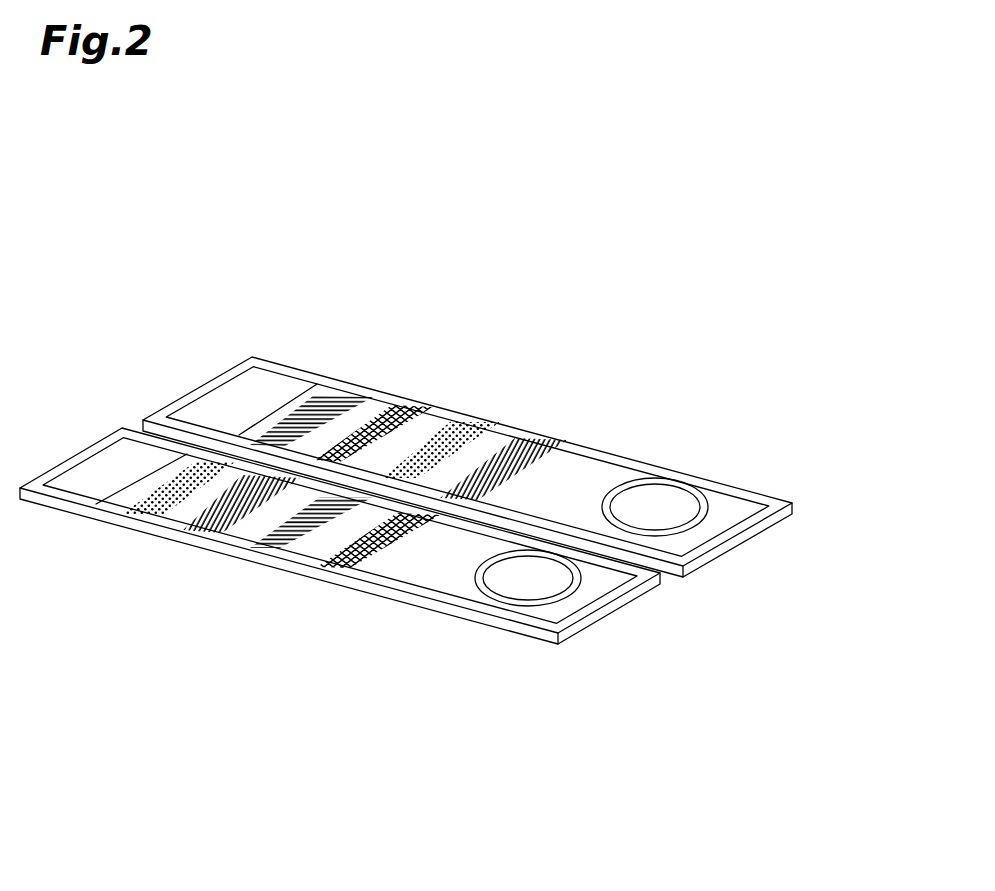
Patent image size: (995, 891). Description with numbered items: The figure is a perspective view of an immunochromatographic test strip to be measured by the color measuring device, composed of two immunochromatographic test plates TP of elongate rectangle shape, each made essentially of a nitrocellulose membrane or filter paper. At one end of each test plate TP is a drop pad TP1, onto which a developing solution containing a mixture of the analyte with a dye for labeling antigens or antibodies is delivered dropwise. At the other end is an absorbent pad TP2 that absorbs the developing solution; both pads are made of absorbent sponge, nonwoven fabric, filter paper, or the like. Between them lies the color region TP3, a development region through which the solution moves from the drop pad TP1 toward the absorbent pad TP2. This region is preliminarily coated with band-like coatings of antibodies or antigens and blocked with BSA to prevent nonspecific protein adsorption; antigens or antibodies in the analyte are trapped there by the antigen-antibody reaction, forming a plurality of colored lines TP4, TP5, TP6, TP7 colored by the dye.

The immunochromatographic test plate TP is at (738, 543).
The drop pad TP1 is at (657, 500).
The absorbent pad TP2 is at (239, 396).
The color region TP3 is at (645, 366).
The colored line TP4 is at (520, 439).
The colored line TP5 is at (445, 429).
The colored line TP6 is at (390, 409).
The colored line TP7 is at (327, 393).